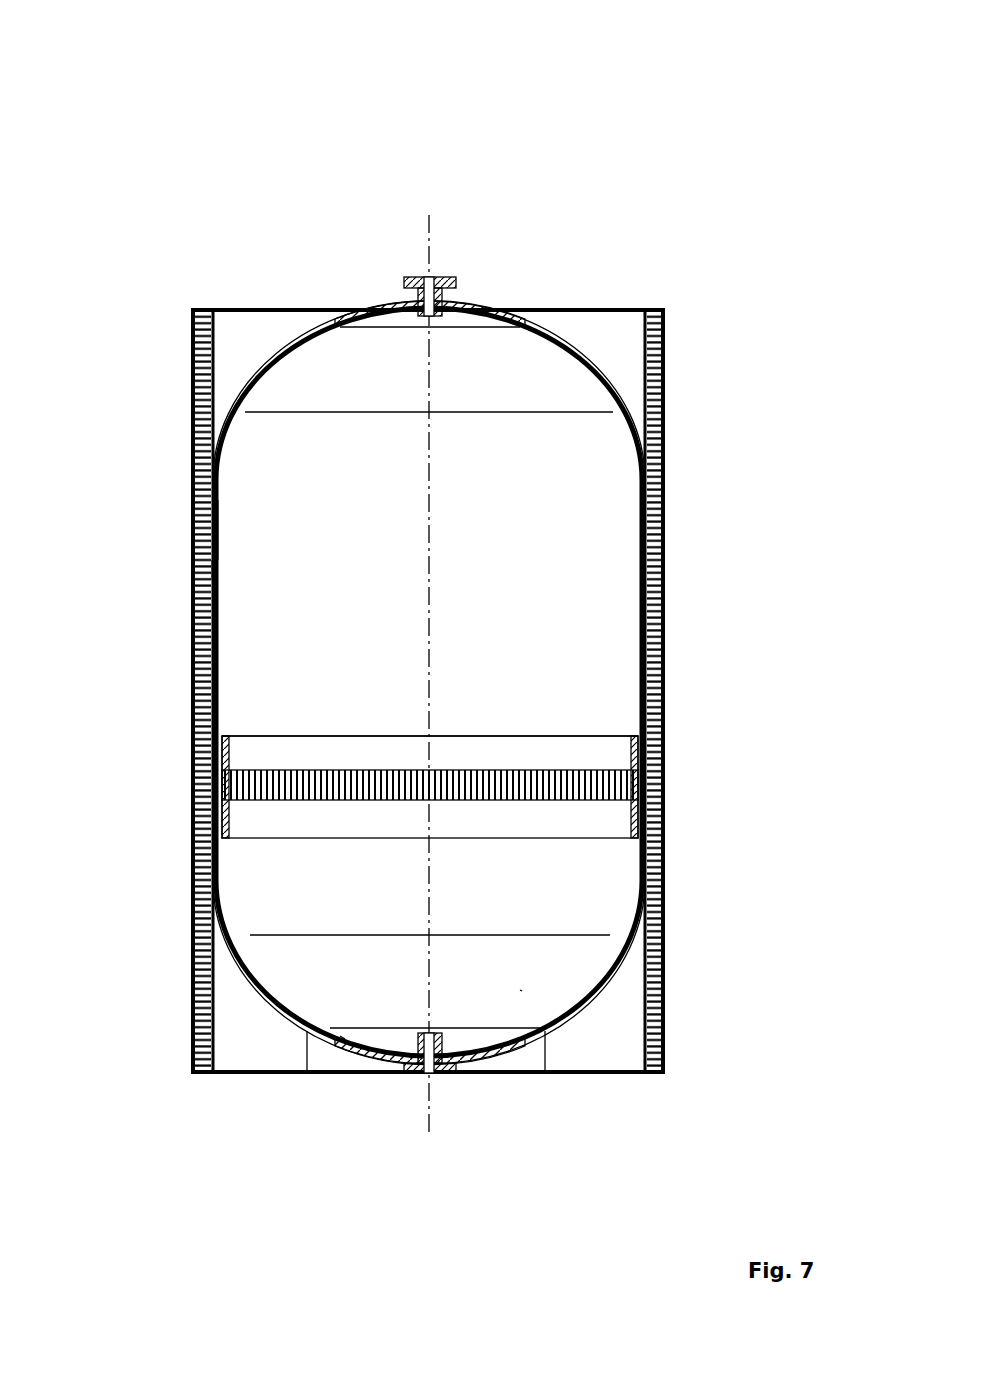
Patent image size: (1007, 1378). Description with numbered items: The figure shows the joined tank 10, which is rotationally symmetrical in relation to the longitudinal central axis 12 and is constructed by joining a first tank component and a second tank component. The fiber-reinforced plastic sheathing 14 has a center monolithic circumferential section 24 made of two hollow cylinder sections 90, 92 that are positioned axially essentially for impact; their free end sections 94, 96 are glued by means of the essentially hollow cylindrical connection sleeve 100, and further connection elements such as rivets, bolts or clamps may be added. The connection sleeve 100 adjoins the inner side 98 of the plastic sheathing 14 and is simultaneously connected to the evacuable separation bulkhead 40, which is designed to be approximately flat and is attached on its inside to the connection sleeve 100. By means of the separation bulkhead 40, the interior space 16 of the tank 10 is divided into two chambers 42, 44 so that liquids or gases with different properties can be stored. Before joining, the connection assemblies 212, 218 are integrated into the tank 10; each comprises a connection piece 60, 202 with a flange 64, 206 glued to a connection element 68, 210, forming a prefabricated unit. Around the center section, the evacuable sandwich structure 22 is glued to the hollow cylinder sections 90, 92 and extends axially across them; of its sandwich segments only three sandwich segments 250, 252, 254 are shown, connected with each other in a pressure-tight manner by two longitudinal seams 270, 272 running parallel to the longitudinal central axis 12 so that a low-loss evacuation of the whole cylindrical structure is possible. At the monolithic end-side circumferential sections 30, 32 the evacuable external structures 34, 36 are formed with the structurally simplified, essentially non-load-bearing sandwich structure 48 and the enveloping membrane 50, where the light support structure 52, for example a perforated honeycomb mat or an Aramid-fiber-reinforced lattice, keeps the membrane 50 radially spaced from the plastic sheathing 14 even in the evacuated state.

The tank 10 is at (220, 165).
The longitudinal central axis 12 is at (431, 218).
The plastic sheathing 14 is at (611, 424).
The interior space 16 is at (422, 469).
The evacuable sandwich structure 22 is at (200, 375).
The center monolithic circumferential section 24 is at (205, 570).
The end-side circumferential section 30 is at (272, 342).
The end-side circumferential section 32 is at (287, 1010).
The evacuable external structure 34 is at (302, 328).
The evacuable external structure 36 is at (268, 996).
The evacuable separation bulkhead 40 is at (313, 772).
The chamber 42 is at (422, 469).
The chamber 44 is at (430, 898).
The structurally simplified sandwich structure 48 is at (508, 296).
The membrane 50 is at (342, 655).
The light support structure 52 is at (556, 328).
The connection piece 60 is at (482, 290).
The flange 64 is at (377, 287).
The connection element 68 is at (525, 375).
The hollow cylinder section 90 is at (215, 537).
The hollow cylinder section 92 is at (228, 860).
The free end section 94 is at (222, 778).
The free end section 96 is at (222, 832).
The inner side 98 is at (226, 668).
The connection sleeve 100 is at (588, 747).
The connection piece 202 is at (445, 1068).
The flange 206 is at (413, 1066).
The connection element 210 is at (520, 990).
The connection assembly 212 is at (430, 345).
The connection assembly 218 is at (437, 1001).
The sandwich segment 250 is at (262, 1063).
The sandwich segment 252 is at (355, 1060).
The sandwich segment 254 is at (598, 1063).
The longitudinal seam 270 is at (307, 1075).
The longitudinal seam 272 is at (545, 1075).